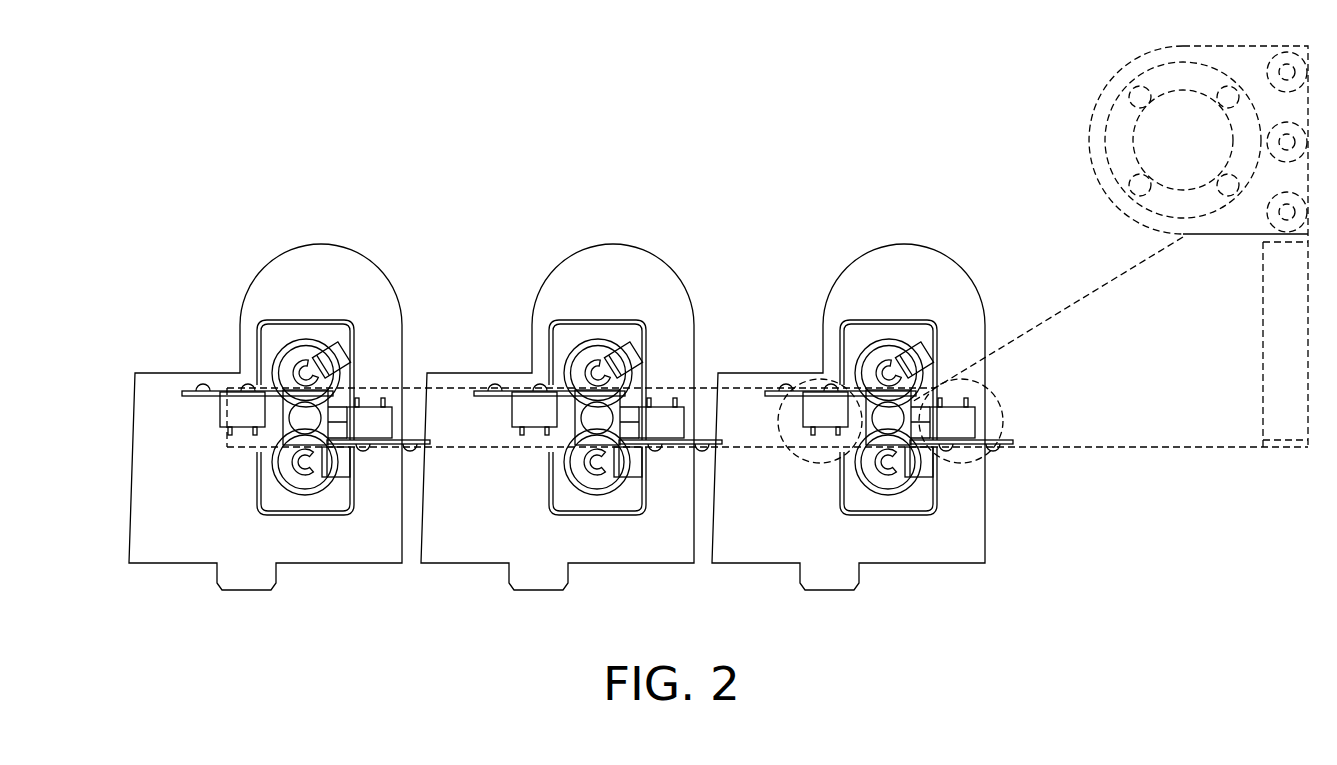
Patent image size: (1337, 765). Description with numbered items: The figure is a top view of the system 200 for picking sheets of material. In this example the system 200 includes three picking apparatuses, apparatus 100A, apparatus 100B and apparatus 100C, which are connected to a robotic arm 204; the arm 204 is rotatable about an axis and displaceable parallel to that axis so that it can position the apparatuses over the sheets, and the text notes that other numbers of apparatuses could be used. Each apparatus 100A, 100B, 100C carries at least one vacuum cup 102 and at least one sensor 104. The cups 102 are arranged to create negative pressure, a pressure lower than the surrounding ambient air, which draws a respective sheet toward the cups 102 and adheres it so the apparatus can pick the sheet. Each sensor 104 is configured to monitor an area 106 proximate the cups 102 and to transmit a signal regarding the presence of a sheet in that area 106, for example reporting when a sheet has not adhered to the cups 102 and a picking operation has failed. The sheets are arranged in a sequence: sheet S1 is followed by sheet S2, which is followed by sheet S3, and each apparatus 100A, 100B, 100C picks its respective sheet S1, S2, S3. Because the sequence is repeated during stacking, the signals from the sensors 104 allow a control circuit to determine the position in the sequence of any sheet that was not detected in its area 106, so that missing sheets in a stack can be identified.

The system 200 is at (624, 148).
The robotic arm 204 is at (1126, 450).
The sheet S1 is at (866, 417).
The sheet S2 is at (575, 417).
The sheet S3 is at (384, 265).
The apparatus 100A is at (889, 466).
The apparatus 100B is at (598, 466).
The apparatus 100C is at (316, 497).
The vacuum cup 102 is at (293, 341).
The sensor 104 is at (237, 410).
The area 106 is at (800, 460).